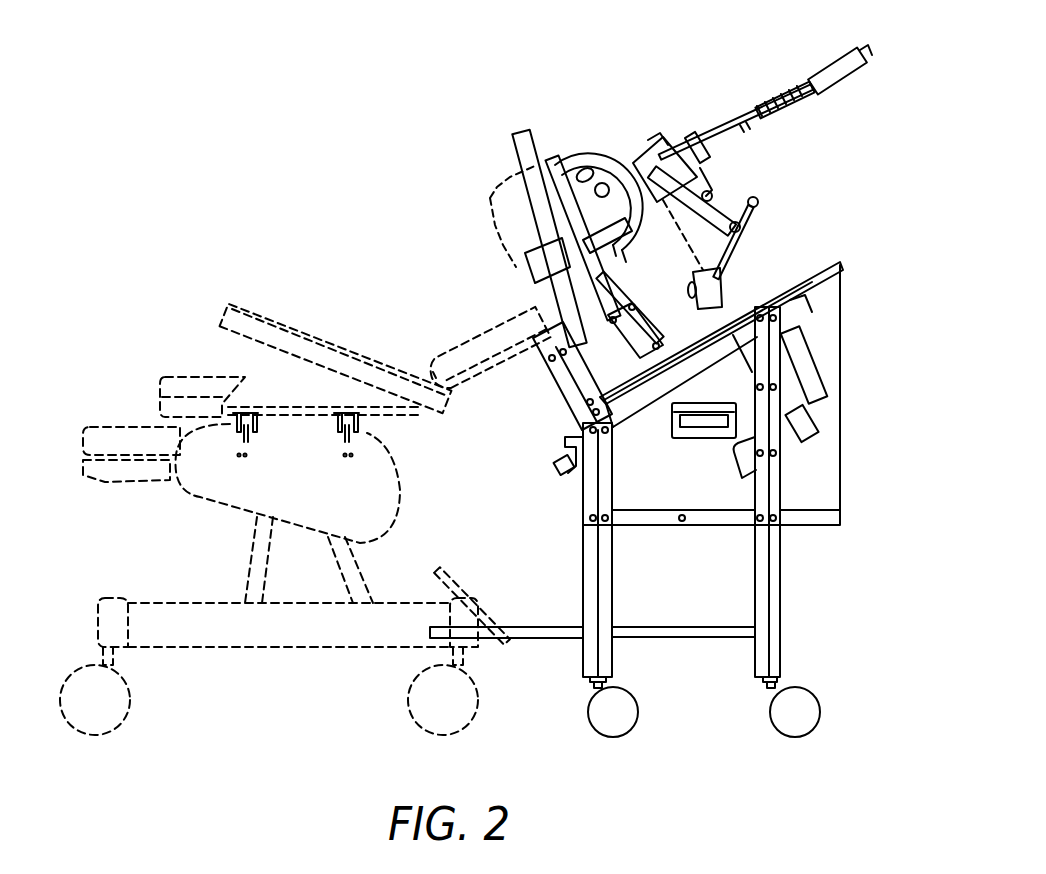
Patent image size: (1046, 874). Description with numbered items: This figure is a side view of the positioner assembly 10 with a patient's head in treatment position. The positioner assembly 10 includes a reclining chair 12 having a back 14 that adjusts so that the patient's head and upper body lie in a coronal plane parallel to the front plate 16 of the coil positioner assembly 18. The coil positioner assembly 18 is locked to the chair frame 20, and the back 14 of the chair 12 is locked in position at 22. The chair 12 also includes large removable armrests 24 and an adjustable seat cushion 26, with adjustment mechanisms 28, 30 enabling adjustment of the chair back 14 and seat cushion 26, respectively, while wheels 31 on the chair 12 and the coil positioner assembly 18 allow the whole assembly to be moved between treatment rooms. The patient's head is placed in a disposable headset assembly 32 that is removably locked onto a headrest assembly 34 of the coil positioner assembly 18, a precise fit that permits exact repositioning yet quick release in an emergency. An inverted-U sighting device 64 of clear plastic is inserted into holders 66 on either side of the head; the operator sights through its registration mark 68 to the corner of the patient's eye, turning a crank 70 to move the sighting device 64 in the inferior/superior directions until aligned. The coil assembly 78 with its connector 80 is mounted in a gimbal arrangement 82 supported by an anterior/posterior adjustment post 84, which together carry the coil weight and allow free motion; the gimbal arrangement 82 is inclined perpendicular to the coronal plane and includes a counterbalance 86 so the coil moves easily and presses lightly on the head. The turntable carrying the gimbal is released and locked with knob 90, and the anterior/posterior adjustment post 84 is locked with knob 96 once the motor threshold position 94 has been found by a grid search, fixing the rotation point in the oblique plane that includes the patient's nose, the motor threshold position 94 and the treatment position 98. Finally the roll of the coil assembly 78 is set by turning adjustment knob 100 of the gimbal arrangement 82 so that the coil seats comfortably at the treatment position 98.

The positioner assembly 10 is at (320, 190).
The reclining chair 12 is at (150, 372).
The back 14 is at (433, 370).
The front plate 16 is at (805, 270).
The coil positioner assembly 18 is at (610, 90).
The chair frame 20 is at (465, 597).
The lock position 22 is at (540, 360).
The armrest 24 is at (258, 308).
The seat cushion 26 is at (130, 422).
The adjustment mechanism 28 is at (233, 440).
The adjustment mechanism 30 is at (90, 472).
The wheels 31 is at (130, 690).
The headset assembly 32 is at (537, 274).
The headrest assembly 34 is at (546, 303).
The sighting device 64 is at (515, 155).
The holders 66 is at (620, 312).
The registration mark 68 is at (527, 145).
The crank 70 is at (556, 468).
The coil assembly 78 is at (670, 150).
The connector 80 is at (810, 88).
The gimbal arrangement 82 is at (740, 200).
The anterior/posterior adjustment post 84 is at (745, 250).
The counterbalance 86 is at (795, 405).
The knob 90 is at (785, 262).
The motor threshold position 94 is at (605, 185).
The knob 96 is at (685, 318).
The treatment position 98 is at (585, 170).
The adjustment knob 100 is at (705, 178).